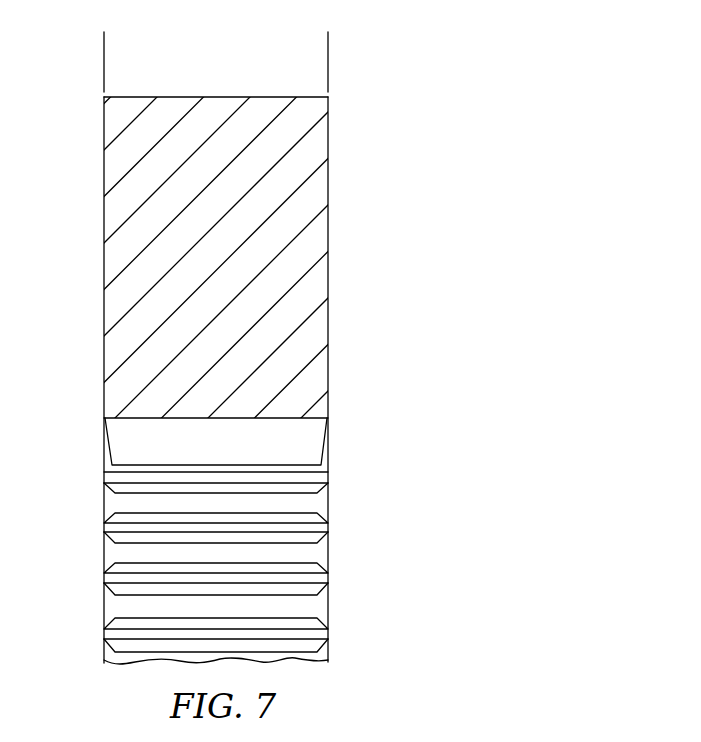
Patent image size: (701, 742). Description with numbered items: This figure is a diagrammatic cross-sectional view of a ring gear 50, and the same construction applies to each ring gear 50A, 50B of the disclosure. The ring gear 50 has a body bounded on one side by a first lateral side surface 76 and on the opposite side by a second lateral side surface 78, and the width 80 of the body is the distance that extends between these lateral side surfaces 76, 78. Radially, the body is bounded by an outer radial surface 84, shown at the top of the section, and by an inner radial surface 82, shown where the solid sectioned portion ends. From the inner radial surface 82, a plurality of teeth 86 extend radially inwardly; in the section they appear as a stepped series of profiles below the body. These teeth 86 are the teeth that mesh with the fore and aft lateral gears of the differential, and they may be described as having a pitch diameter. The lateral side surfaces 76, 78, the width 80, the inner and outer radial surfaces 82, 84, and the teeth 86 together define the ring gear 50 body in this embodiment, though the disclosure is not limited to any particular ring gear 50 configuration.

The ring gear 50 is at (350, 332).
The ring gear 50A is at (350, 332).
The ring gear 50B is at (350, 332).
The first lateral side surface 76 is at (104, 135).
The second lateral side surface 78 is at (328, 147).
The width 80 is at (328, 36).
The inner radial surface 82 is at (283, 420).
The outer radial surface 84 is at (238, 97).
The teeth 86 is at (157, 443).